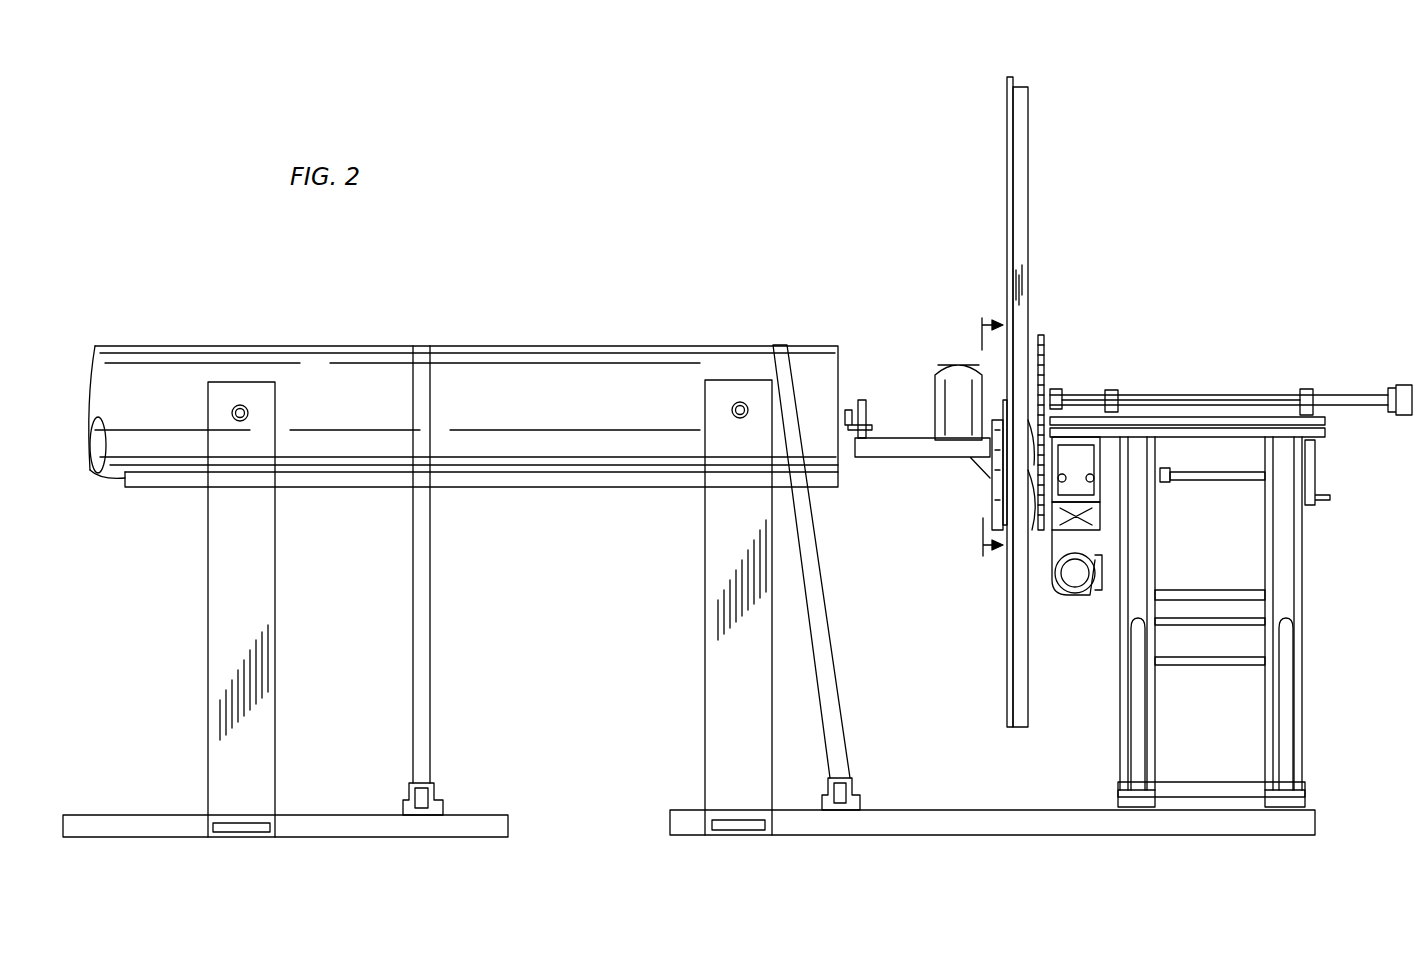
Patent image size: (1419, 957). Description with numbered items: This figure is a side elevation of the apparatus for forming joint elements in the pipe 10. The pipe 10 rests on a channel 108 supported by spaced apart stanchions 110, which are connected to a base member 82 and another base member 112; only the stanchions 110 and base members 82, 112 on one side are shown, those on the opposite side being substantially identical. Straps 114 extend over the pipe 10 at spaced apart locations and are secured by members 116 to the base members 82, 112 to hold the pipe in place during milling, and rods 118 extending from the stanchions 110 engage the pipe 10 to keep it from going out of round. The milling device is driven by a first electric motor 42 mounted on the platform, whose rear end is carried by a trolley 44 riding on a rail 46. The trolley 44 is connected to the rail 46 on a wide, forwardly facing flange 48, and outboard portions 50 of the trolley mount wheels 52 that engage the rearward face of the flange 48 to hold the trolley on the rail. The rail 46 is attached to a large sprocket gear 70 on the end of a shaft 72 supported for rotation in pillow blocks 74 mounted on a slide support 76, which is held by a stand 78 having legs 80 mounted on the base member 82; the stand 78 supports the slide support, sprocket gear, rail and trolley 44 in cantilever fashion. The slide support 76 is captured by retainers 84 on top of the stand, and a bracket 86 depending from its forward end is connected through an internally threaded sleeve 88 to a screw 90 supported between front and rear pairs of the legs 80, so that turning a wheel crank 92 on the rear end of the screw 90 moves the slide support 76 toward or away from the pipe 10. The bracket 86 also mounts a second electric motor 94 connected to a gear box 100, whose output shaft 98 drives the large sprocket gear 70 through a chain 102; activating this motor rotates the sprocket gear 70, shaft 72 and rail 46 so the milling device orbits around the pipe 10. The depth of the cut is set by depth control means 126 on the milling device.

The first pipe 10 is at (606, 333).
The first electric motor 42 is at (940, 363).
The trolley 44 is at (975, 518).
The rail 46 is at (1028, 86).
The flange 48 is at (1006, 106).
The outboard portions 50 is at (1052, 560).
The wheels 52 is at (1040, 378).
The large sprocket gear 70 is at (1046, 352).
The shaft 72 is at (1225, 392).
The pillow blocks 74 is at (1062, 392).
The slide support 76 is at (1122, 395).
The stand 78 is at (1320, 533).
The legs 80 is at (1130, 683).
The base member 82 is at (812, 838).
The retainers 84 is at (1285, 395).
The bracket 86 is at (1100, 470).
The internally threaded sleeve 88 is at (1168, 490).
The screw 90 is at (1215, 482).
The wheel crank 92 is at (1316, 460).
The second electric motor 94 is at (1090, 590).
The output shaft 98 is at (1096, 570).
The gear box 100 is at (1100, 548).
The chain 102 is at (992, 480).
The channel 108 is at (548, 480).
The stanchions 110 is at (220, 533).
The base member 112 is at (368, 838).
The straps 114 is at (421, 578).
The members 116 is at (440, 805).
The rods 118 is at (244, 405).
The depth control means 126 is at (880, 408).